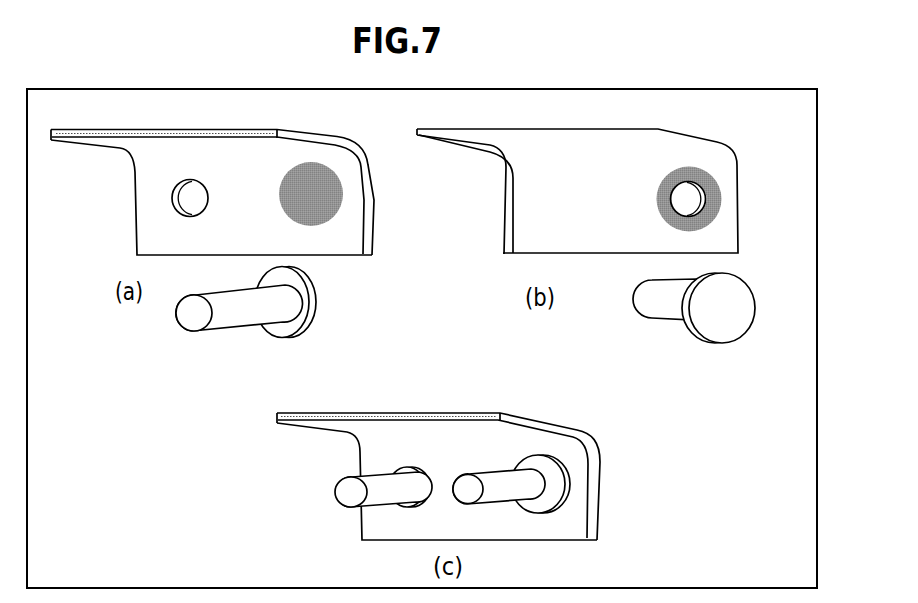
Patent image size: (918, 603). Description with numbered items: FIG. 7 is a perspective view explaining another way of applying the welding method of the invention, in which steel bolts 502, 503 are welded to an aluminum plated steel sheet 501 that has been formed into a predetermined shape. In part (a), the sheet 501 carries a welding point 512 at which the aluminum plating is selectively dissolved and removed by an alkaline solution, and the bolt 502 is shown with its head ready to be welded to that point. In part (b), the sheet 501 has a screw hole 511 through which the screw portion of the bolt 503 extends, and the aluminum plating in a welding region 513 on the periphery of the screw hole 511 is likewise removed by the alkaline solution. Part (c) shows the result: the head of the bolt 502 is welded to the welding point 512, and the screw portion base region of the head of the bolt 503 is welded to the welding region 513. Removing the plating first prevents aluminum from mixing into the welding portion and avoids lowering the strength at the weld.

The aluminum plated steel sheet 501 is at (138, 197).
The bolt 502 is at (312, 305).
The bolt 503 is at (747, 311).
The screw hole 511 is at (187, 217).
The welding point 512 is at (338, 198).
The welding region 513 is at (688, 170).